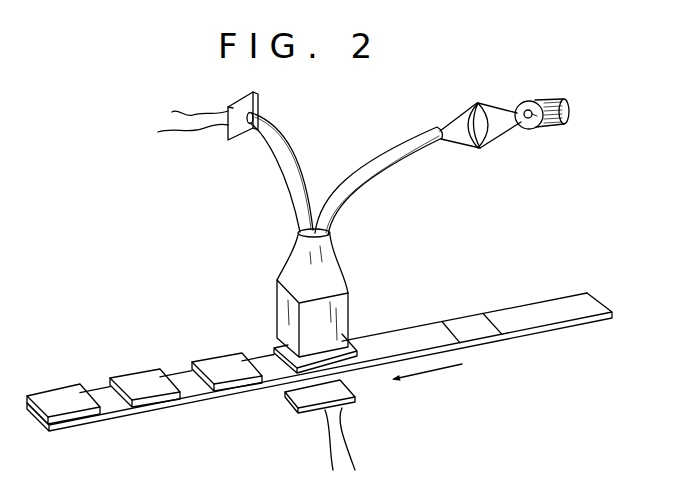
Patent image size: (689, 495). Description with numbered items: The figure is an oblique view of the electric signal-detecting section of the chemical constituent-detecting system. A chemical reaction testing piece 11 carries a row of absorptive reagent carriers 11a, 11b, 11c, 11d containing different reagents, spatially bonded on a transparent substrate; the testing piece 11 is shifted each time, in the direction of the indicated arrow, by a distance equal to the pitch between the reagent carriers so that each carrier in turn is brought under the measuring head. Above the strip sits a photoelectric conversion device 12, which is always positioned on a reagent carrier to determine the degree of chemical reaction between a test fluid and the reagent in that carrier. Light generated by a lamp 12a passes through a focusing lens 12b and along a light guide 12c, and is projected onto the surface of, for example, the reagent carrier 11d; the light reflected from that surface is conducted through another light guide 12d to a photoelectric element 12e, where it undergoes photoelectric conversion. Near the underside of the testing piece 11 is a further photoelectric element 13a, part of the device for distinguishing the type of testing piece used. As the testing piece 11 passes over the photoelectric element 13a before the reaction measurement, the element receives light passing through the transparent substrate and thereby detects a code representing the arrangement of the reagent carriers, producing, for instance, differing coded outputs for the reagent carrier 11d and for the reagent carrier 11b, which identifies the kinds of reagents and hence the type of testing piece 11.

The chemical reaction testing piece 11 is at (399, 329).
The absorptive reagent carrier 11a is at (92, 412).
The absorptive reagent carrier 11b is at (158, 404).
The absorptive reagent carrier 11c is at (233, 389).
The absorptive reagent carrier 11d is at (281, 356).
The photoelectric conversion device 12 is at (401, 254).
The lamp 12a is at (530, 101).
The focusing lens 12b is at (478, 104).
The light guide 12c is at (386, 151).
The light guide 12d is at (287, 183).
The photoelectric element 12e is at (208, 131).
The photoelectric element 13a is at (292, 404).